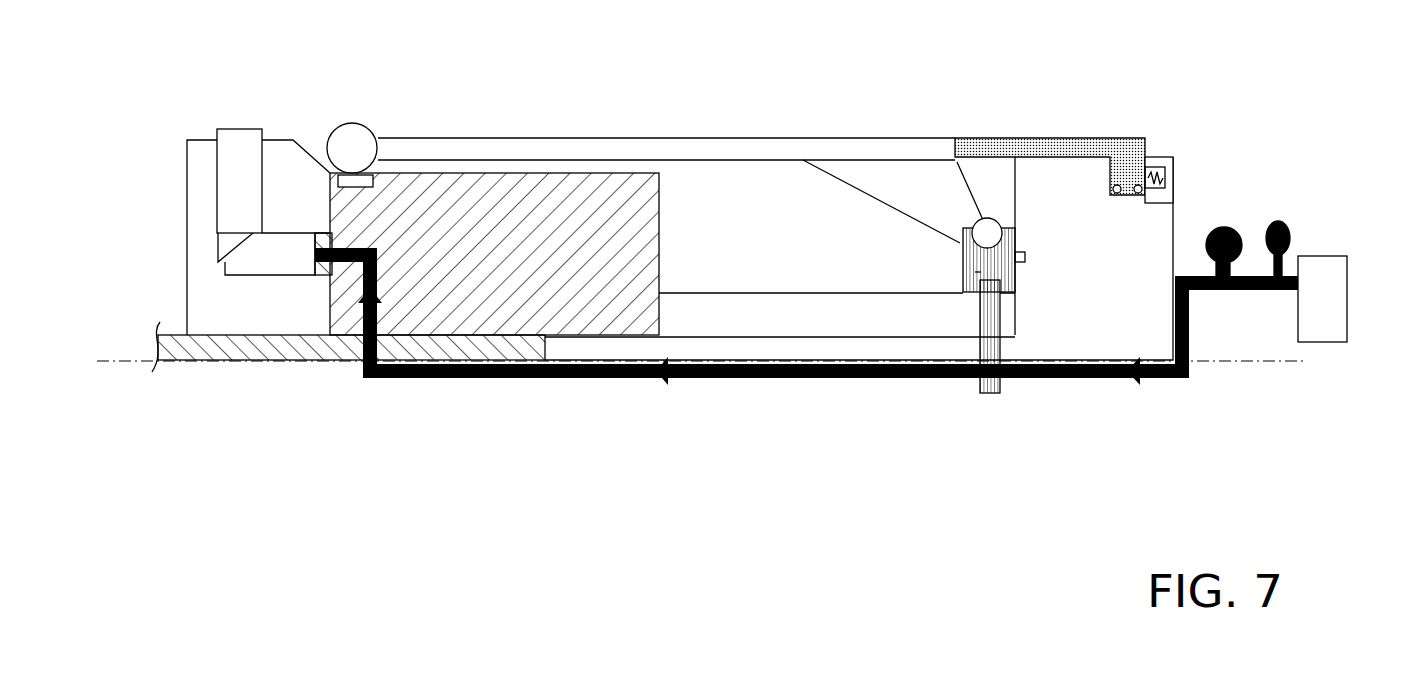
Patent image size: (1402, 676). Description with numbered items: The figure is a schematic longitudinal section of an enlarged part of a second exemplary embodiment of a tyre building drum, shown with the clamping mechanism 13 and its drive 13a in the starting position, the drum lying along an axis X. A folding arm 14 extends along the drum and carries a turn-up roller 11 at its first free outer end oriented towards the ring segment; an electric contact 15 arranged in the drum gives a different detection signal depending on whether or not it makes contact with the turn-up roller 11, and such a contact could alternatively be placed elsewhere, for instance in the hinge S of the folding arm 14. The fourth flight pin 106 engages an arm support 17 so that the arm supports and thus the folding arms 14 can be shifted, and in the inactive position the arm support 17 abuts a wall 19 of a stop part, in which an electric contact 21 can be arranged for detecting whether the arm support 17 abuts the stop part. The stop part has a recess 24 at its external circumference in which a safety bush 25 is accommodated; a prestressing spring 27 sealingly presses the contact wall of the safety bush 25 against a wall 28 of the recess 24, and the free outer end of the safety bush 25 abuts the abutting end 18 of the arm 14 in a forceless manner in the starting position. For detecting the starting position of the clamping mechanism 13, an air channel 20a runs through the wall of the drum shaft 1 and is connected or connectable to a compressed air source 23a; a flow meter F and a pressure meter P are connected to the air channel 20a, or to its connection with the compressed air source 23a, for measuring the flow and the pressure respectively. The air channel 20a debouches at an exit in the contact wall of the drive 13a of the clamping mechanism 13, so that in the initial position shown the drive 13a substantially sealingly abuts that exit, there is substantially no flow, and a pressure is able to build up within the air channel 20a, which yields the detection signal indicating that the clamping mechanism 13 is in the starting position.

The drum shaft 1 is at (210, 337).
The turn-up roller 11 is at (351, 123).
The clamping mechanism 13 is at (240, 145).
The drive of the clamping mechanism 13a is at (265, 262).
The arm 14 is at (532, 145).
The electric contact 15 is at (330, 182).
The arm support 17 is at (960, 260).
The abutting end 18 is at (955, 150).
The wall 19 is at (1017, 318).
The air channel 20a is at (1150, 378).
The electric contact 21 is at (1023, 262).
The compressed air source 23a is at (1318, 268).
The recess 24 is at (1148, 196).
The safety bush 25 is at (1107, 139).
The prestressing spring 27 is at (1165, 170).
The wall 28 is at (1110, 189).
The fourth flight pin 106 is at (1000, 383).
The axis X is at (115, 365).
The hinge S is at (975, 272).
The pressure meter P is at (1220, 227).
The flow meter F is at (1278, 220).